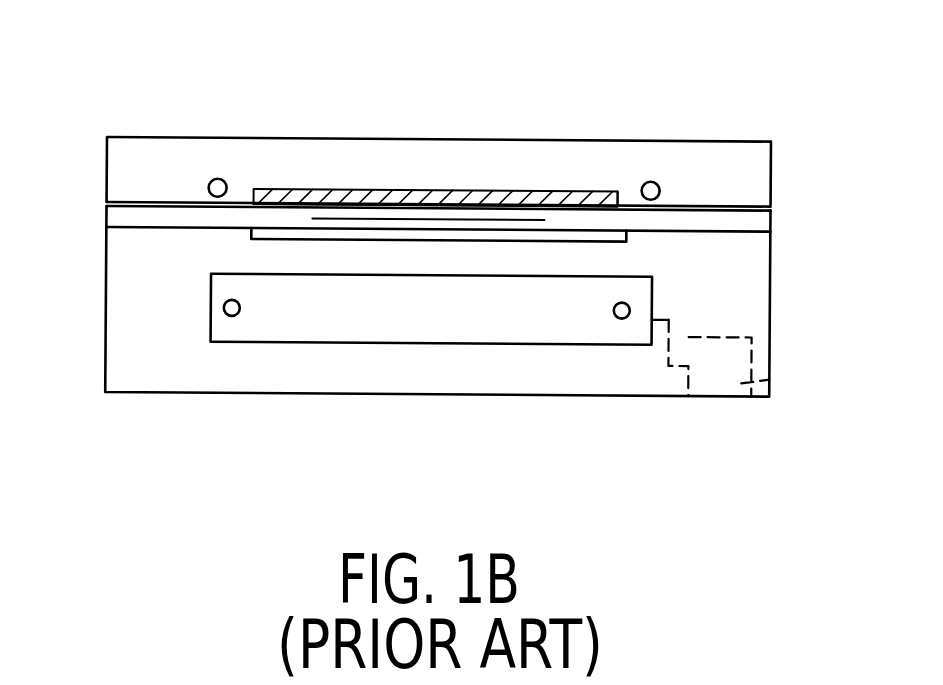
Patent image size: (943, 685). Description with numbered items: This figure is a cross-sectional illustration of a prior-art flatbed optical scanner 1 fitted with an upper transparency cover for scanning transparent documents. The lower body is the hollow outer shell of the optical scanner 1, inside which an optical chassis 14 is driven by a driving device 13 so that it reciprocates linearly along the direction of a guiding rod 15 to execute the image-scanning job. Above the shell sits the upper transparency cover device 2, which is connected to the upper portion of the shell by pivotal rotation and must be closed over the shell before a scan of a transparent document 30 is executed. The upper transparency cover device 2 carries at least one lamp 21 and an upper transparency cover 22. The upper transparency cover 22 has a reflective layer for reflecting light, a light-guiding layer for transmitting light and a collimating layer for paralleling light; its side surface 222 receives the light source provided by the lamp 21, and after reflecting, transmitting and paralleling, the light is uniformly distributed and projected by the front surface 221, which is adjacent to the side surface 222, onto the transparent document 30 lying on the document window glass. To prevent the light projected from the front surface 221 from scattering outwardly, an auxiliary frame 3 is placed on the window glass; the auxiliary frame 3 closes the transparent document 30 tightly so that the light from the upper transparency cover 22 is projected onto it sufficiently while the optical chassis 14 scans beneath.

The optical scanner 1 is at (683, 433).
The upper transparency cover device 2 is at (305, 112).
The auxiliary frame 3 is at (113, 218).
The driving device 13 is at (771, 375).
The optical chassis 14 is at (647, 284).
The guiding rod 15 is at (225, 307).
The lamp 21 is at (216, 178).
The upper transparency cover 22 is at (419, 162).
The transparent document 30 is at (505, 218).
The front surface 221 is at (444, 203).
The side surface 222 is at (616, 199).